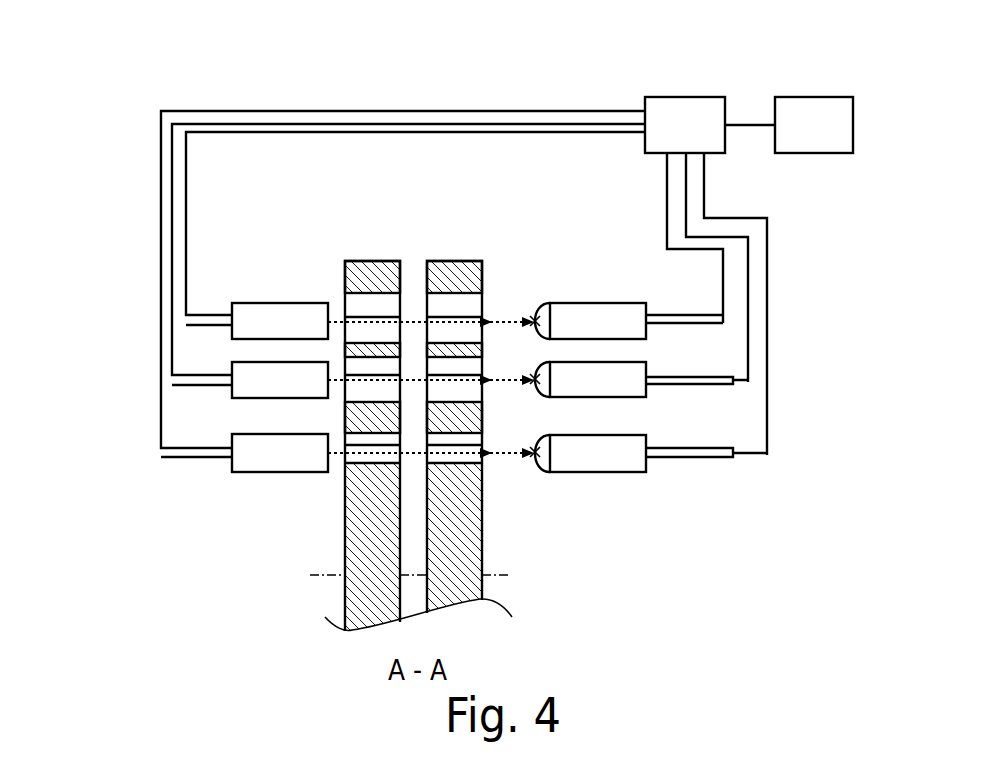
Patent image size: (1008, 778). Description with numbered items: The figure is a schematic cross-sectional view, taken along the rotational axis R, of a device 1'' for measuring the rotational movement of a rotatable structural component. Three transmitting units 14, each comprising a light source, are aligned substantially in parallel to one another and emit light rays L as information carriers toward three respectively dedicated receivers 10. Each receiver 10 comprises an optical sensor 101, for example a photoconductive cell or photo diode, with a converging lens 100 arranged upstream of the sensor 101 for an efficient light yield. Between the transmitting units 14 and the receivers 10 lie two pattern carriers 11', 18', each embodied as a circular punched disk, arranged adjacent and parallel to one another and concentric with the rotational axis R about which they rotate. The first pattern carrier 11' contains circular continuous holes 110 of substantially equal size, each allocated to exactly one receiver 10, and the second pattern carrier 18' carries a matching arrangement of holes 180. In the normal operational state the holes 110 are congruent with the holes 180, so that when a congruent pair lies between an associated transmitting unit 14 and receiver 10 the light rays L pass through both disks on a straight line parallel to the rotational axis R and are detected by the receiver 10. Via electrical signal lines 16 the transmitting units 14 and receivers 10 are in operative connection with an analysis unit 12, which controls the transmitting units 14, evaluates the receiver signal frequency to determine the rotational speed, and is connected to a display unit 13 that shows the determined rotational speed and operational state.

The device 1'' is at (99, 105).
The analysis unit 12 is at (684, 97).
The display unit 13 is at (812, 97).
The electrical signal lines 16 is at (315, 132).
The transmitting unit 14 is at (255, 303).
The second pattern carrier 18' is at (329, 438).
The holes 180 is at (352, 395).
The first pattern carrier 11' is at (490, 414).
The holes 110 is at (483, 362).
The light rays L is at (418, 318).
The receiver 10 is at (664, 357).
The lens 100 is at (540, 310).
The optical sensor 101 is at (622, 312).
The rotational axis R is at (325, 577).